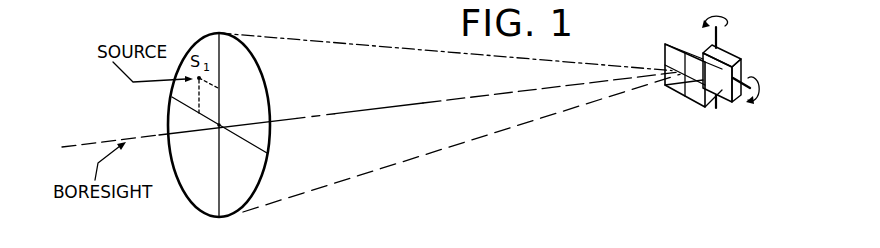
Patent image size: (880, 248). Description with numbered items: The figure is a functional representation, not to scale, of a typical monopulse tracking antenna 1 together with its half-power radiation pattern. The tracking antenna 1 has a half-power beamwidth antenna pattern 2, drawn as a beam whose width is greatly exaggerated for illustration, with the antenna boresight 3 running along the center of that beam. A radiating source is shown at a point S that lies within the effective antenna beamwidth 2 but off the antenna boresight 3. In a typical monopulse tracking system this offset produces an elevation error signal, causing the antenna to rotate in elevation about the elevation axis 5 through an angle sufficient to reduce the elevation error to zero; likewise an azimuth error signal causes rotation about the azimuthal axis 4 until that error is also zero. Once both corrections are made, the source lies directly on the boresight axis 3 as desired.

The tracking antenna 1 is at (683, 118).
The half-power beamwidth antenna pattern 2 is at (462, 141).
The antenna boresight 3 is at (372, 112).
The azimuthal axis 4 is at (720, 33).
The elevation axis 5 is at (762, 78).